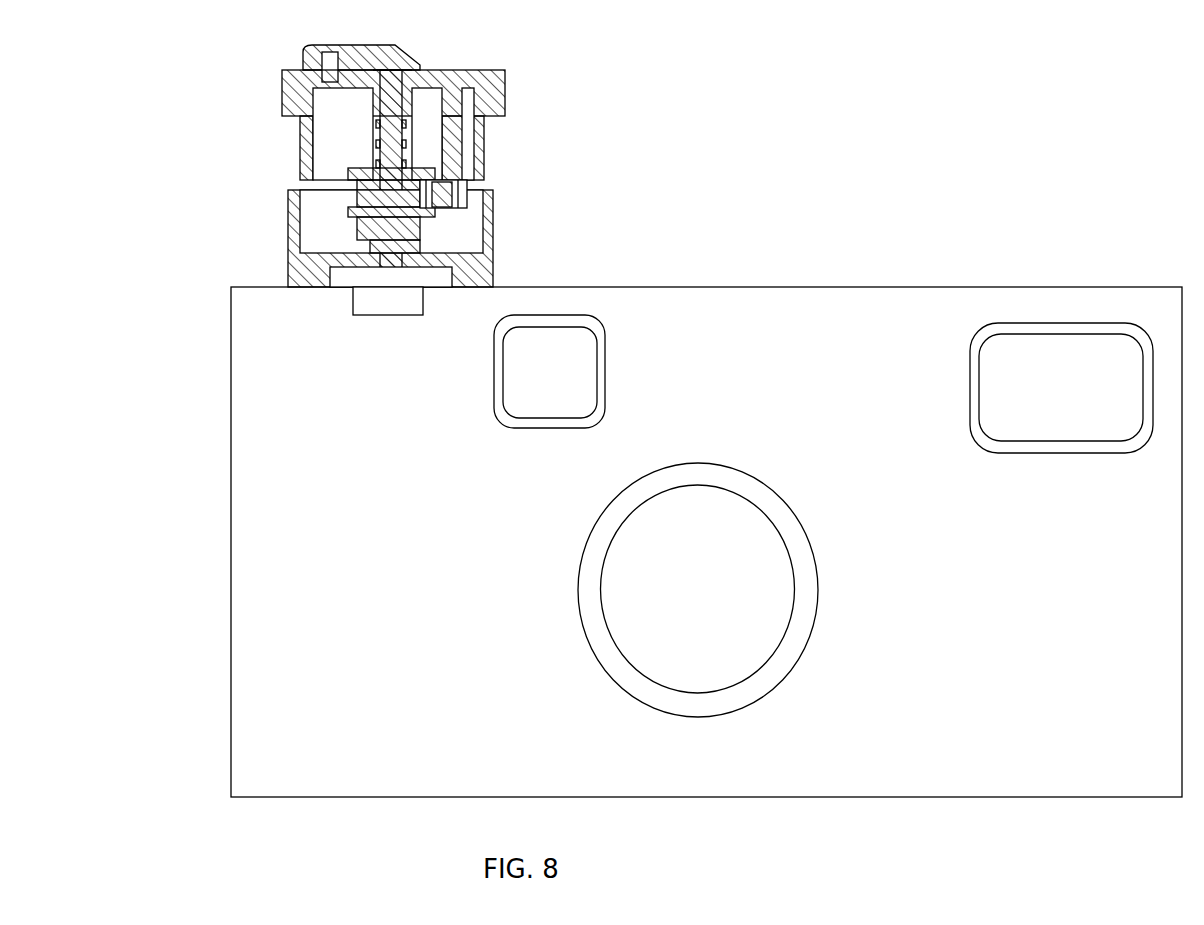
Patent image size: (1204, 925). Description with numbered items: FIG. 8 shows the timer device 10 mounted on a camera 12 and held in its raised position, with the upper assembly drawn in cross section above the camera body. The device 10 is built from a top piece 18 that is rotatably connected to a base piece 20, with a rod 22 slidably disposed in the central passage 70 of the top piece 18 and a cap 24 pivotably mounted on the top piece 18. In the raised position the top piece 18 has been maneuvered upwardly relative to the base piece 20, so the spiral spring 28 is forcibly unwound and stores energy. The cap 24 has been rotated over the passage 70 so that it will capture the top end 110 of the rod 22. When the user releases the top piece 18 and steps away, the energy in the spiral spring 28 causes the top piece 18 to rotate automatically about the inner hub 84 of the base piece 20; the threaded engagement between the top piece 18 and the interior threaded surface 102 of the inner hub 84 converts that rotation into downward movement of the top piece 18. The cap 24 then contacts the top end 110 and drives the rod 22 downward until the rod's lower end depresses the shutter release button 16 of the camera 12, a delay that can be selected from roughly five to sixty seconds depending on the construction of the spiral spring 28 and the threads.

The timer device 10 is at (231, 100).
The camera 12 is at (947, 278).
The shutter release button 16 is at (385, 310).
The top piece 18 is at (507, 89).
The base piece 20 is at (496, 224).
The rod 22 is at (385, 104).
The cap 24 is at (351, 42).
The spiral spring 28 is at (352, 199).
The passage 70 is at (404, 80).
The inner hub 84 is at (427, 238).
The threaded surface 102 is at (358, 228).
The top end 110 is at (388, 72).